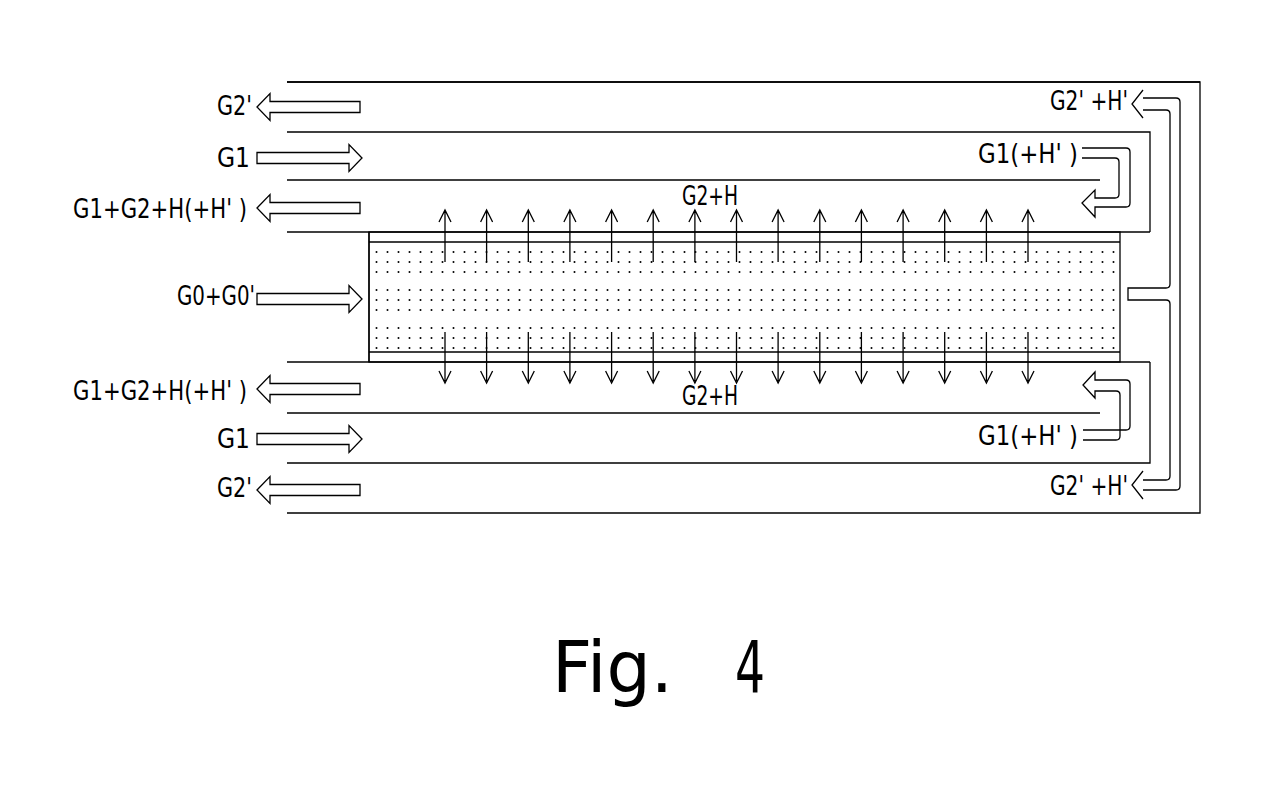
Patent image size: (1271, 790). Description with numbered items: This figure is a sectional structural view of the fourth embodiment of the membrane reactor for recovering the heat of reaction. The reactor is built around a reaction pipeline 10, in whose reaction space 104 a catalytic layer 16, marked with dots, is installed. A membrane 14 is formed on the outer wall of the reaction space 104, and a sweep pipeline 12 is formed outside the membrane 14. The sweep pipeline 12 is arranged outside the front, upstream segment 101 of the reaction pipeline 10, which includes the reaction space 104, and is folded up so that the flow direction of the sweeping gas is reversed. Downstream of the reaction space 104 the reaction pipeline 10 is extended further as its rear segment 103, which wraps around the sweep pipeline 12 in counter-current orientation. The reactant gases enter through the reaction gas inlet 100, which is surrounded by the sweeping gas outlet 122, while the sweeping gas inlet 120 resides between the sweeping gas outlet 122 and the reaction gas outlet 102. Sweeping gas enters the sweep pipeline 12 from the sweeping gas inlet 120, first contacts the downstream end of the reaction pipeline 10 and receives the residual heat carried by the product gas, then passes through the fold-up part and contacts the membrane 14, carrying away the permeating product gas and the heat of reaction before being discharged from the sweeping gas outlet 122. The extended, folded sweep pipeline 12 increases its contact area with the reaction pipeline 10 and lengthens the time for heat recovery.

The reaction pipeline 10 is at (1192, 297).
The sweep pipeline 12 is at (1143, 383).
The membrane 14 is at (428, 240).
The catalytic layer 16 is at (423, 342).
The reaction gas inlet 100 is at (293, 287).
The front segment 101 is at (1130, 262).
The reaction gas outlet 102 is at (287, 93).
The rear segment 103 is at (970, 100).
The reaction space 104 is at (388, 277).
The sweeping gas inlet 120 is at (287, 143).
The sweeping gas outlet 122 is at (287, 222).